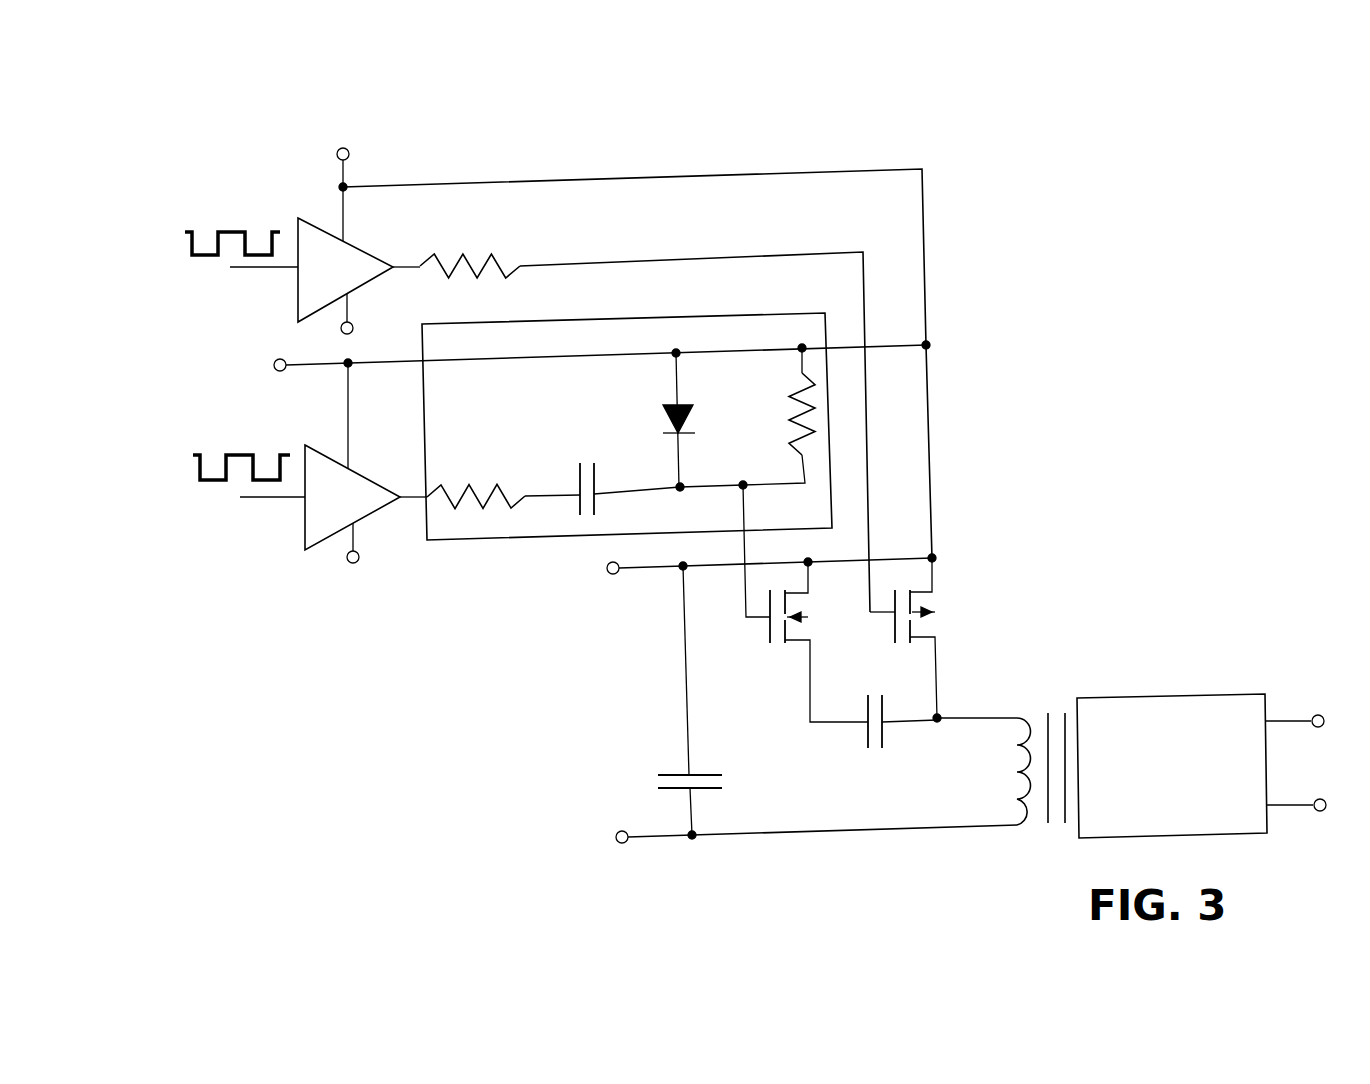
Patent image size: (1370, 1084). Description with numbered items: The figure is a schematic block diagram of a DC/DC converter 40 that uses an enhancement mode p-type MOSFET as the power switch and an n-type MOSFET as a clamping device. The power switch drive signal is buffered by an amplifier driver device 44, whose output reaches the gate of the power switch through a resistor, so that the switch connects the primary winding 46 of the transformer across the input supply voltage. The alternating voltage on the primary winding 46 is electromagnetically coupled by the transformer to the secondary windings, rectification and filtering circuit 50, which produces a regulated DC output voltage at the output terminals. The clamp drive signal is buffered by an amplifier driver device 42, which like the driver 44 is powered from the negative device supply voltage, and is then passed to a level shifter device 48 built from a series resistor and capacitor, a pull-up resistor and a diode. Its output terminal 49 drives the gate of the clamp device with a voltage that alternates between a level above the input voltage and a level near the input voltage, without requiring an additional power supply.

The DC/DC converter 40 is at (771, 480).
The amplifier driver device 42 is at (358, 472).
The amplifier driver device 44 is at (352, 243).
The primary winding 46 is at (998, 764).
The level shifter device 48 is at (500, 323).
The output terminal 49 is at (760, 492).
The secondary windings, rectification and filtering circuit 50 is at (1138, 697).